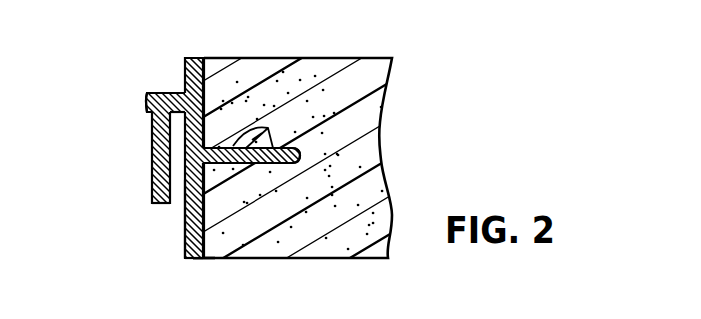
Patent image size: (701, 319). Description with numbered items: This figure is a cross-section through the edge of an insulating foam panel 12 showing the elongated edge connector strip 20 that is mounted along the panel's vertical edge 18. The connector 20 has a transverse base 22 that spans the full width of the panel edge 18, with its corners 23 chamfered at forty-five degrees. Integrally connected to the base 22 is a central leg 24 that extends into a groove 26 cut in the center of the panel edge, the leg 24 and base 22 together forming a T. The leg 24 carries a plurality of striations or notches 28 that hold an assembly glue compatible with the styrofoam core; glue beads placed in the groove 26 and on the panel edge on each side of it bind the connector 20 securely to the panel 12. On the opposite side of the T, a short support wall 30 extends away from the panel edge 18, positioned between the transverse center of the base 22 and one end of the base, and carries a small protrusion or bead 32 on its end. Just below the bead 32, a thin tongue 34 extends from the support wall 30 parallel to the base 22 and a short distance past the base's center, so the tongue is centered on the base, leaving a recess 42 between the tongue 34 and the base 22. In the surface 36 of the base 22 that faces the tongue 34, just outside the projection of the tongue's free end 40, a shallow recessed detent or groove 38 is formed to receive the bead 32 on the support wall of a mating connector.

The insulating foam panel 12 is at (333, 58).
The vertical edge of panel 18 is at (193, 259).
The edge connector strip 20 is at (127, 260).
The transverse base 22 is at (195, 58).
The corners of the base 23 is at (190, 60).
The central leg 24 is at (209, 145).
The groove 26 is at (296, 145).
The striations or notches 28 is at (270, 137).
The support wall 30 is at (164, 92).
The bead 32 is at (148, 99).
The tongue 34 is at (150, 159).
The surface of base 36 is at (188, 258).
The recessed detent or groove 38 is at (183, 176).
The free end of tongue 40 is at (152, 205).
The recess 42 is at (173, 177).